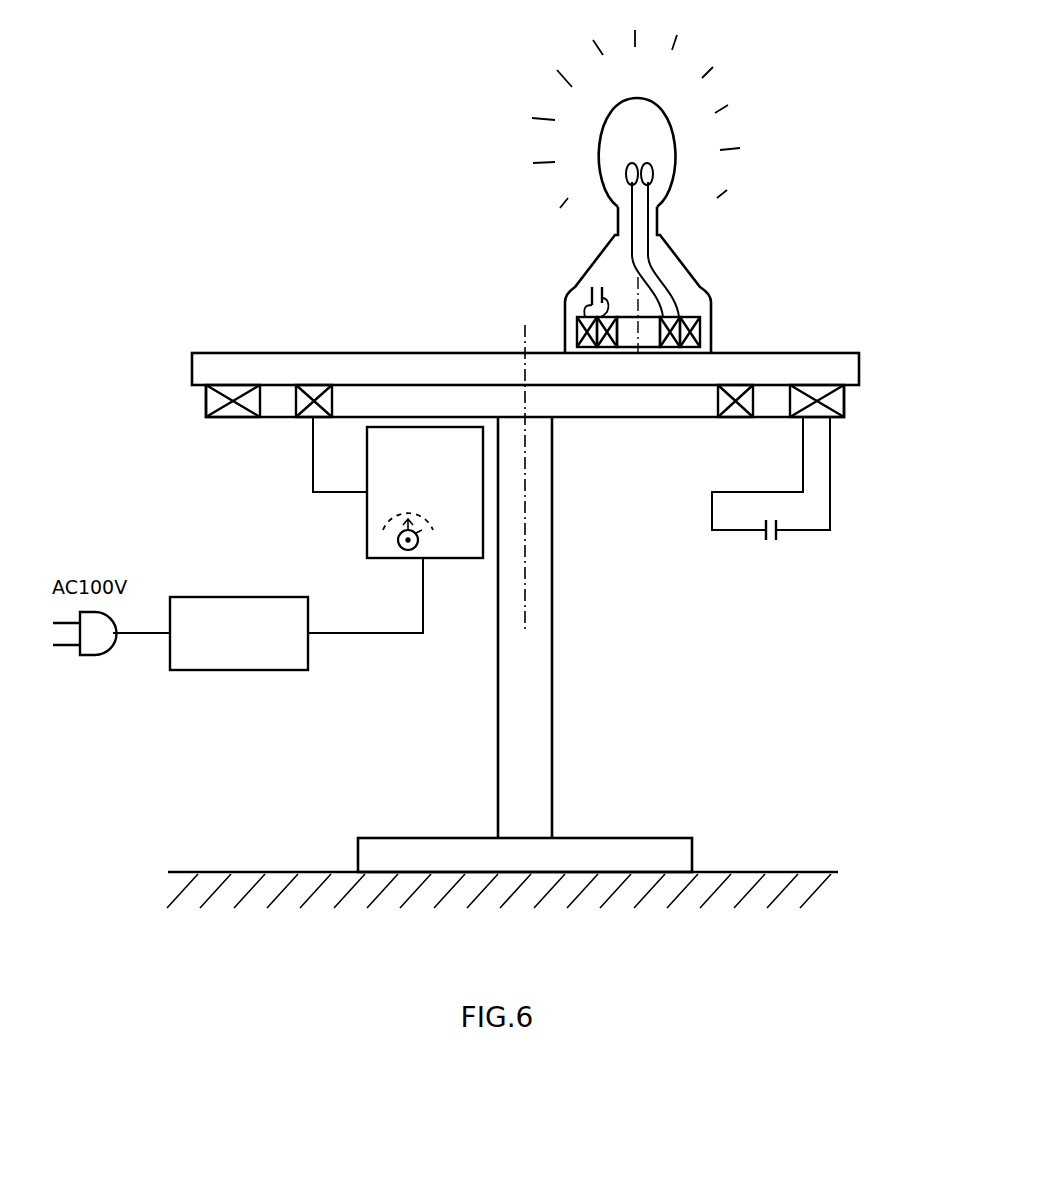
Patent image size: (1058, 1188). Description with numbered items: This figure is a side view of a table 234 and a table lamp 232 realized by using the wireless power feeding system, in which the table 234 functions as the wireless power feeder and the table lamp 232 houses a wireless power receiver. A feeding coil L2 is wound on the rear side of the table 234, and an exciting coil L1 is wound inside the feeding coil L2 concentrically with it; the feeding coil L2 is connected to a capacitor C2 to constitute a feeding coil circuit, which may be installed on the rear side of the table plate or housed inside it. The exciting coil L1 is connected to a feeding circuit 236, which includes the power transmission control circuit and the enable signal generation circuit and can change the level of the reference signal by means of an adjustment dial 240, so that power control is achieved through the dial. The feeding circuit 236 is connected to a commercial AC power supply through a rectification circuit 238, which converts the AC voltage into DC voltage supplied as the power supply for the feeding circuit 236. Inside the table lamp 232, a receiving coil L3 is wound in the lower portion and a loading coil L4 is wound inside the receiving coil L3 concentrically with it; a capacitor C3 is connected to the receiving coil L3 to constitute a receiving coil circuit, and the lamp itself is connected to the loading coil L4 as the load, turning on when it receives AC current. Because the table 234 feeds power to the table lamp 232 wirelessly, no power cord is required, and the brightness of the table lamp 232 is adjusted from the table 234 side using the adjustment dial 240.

The table lamp 232 is at (647, 257).
The table 234 is at (888, 355).
The feeding circuit 236 is at (417, 527).
The rectification circuit 238 is at (240, 671).
The adjustment dial 240 is at (418, 540).
The capacitor C2 is at (771, 495).
The capacitor C3 is at (588, 285).
The exciting coil L1 is at (305, 418).
The feeding coil L2 is at (232, 418).
The receiving coil L3 is at (585, 348).
The loading coil L4 is at (608, 348).